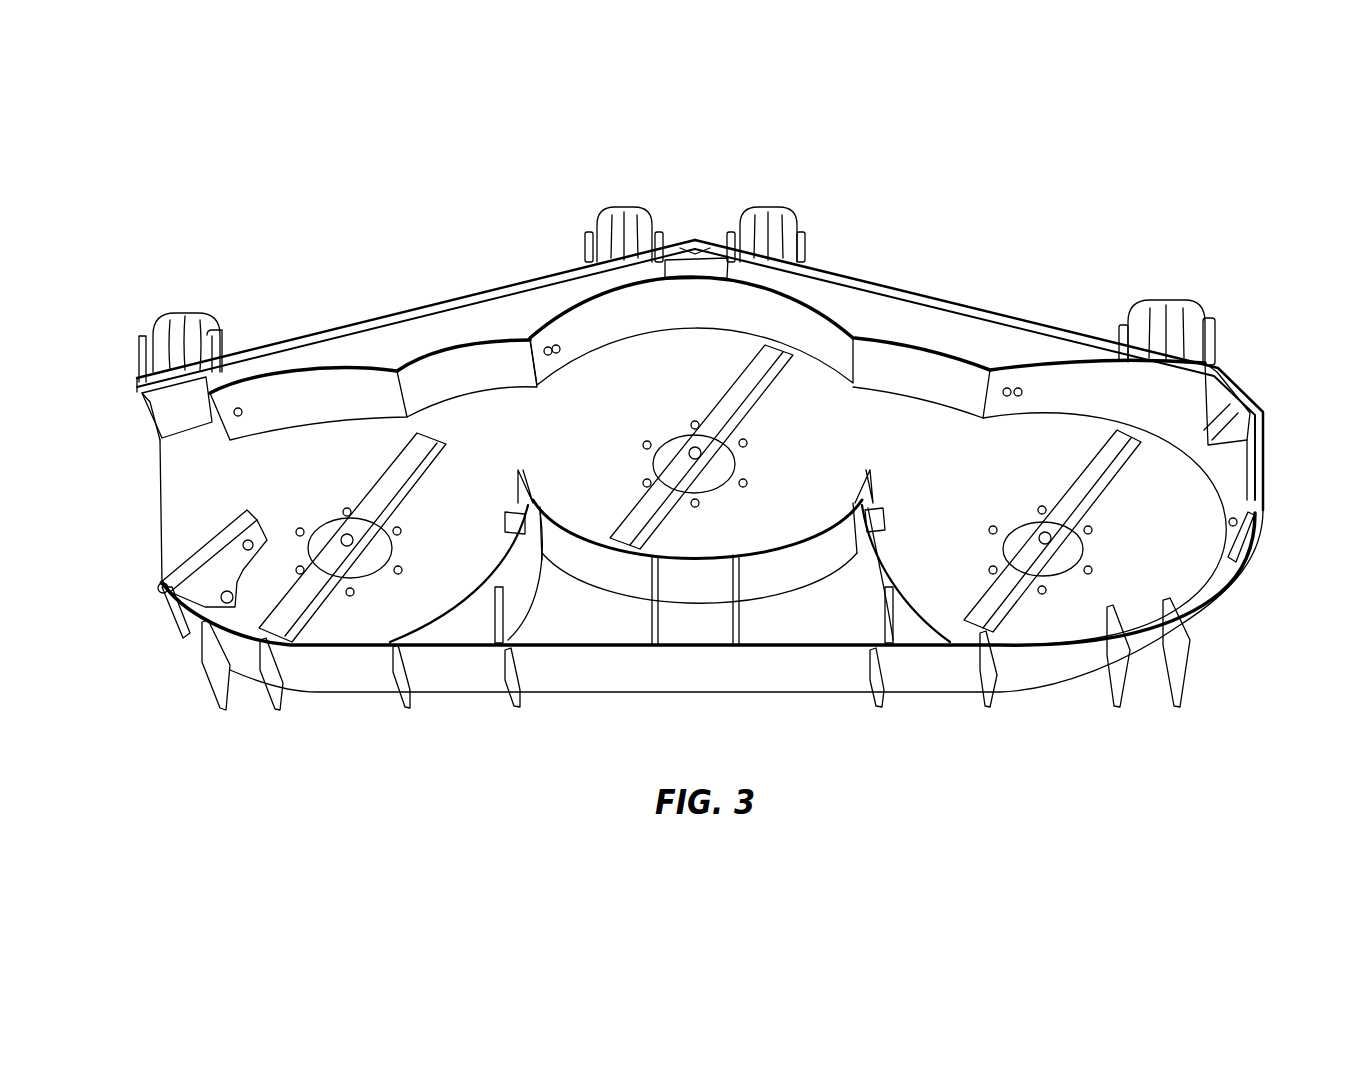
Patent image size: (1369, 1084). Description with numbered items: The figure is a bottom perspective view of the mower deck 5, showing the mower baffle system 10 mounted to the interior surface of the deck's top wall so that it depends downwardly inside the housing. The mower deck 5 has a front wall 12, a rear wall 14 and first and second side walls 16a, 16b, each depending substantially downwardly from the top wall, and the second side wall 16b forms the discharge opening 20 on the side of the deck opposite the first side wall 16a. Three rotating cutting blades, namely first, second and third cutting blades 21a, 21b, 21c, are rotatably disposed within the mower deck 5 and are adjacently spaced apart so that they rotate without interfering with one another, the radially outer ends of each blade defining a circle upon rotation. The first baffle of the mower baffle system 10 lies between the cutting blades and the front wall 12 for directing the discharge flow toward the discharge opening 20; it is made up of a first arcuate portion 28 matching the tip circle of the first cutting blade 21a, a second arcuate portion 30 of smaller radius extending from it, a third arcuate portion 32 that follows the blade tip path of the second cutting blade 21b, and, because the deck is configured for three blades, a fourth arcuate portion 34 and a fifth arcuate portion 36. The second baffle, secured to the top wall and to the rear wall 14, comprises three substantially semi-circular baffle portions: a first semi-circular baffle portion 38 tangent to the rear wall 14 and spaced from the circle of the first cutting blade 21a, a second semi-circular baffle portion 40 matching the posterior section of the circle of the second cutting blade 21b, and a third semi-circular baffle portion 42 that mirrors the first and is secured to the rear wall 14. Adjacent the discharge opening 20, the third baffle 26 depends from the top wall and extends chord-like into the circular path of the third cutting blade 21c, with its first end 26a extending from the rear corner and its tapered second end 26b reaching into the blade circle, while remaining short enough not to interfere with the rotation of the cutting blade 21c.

The mower deck 5 is at (1063, 330).
The mower baffle system 10 is at (887, 323).
The front wall 12 is at (527, 278).
The rear wall 14 is at (717, 677).
The first side wall 16a is at (1266, 447).
The second side wall 16b is at (153, 417).
The discharge opening 20 is at (130, 472).
The first cutting blade 21a is at (1113, 483).
The second cutting blade 21b is at (760, 397).
The third cutting blade 21c is at (417, 487).
The third baffle 26 is at (203, 547).
The first end 26a is at (170, 587).
The second end 26b is at (240, 510).
The first arcuate portion 28 is at (1210, 443).
The second arcuate portion 30 is at (930, 367).
The third arcuate portion 32 is at (803, 317).
The fourth arcuate portion 34 is at (460, 363).
The fifth arcuate portion 36 is at (312, 390).
The first semi-circular baffle portion 38 is at (870, 590).
The second semi-circular baffle portion 40 is at (625, 582).
The third semi-circular baffle portion 42 is at (520, 590).